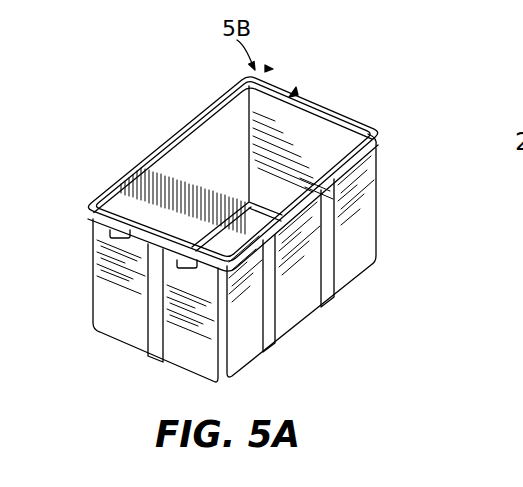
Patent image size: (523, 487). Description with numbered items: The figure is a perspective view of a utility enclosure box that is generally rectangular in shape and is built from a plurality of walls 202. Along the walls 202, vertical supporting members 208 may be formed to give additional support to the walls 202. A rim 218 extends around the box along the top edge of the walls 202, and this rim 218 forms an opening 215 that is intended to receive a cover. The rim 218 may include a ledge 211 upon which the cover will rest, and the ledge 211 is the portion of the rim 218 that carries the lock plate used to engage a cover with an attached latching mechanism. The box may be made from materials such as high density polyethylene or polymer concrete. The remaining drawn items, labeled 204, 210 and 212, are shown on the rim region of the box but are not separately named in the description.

The walls 202 is at (368, 197).
The rim corner 204 is at (378, 127).
The vertical supporting members 208 is at (327, 262).
The rim outer edge 210 is at (358, 117).
The ledge 211 is at (239, 96).
The rim 212 is at (282, 60).
The opening 215 is at (126, 211).
The rim 218 is at (311, 100).